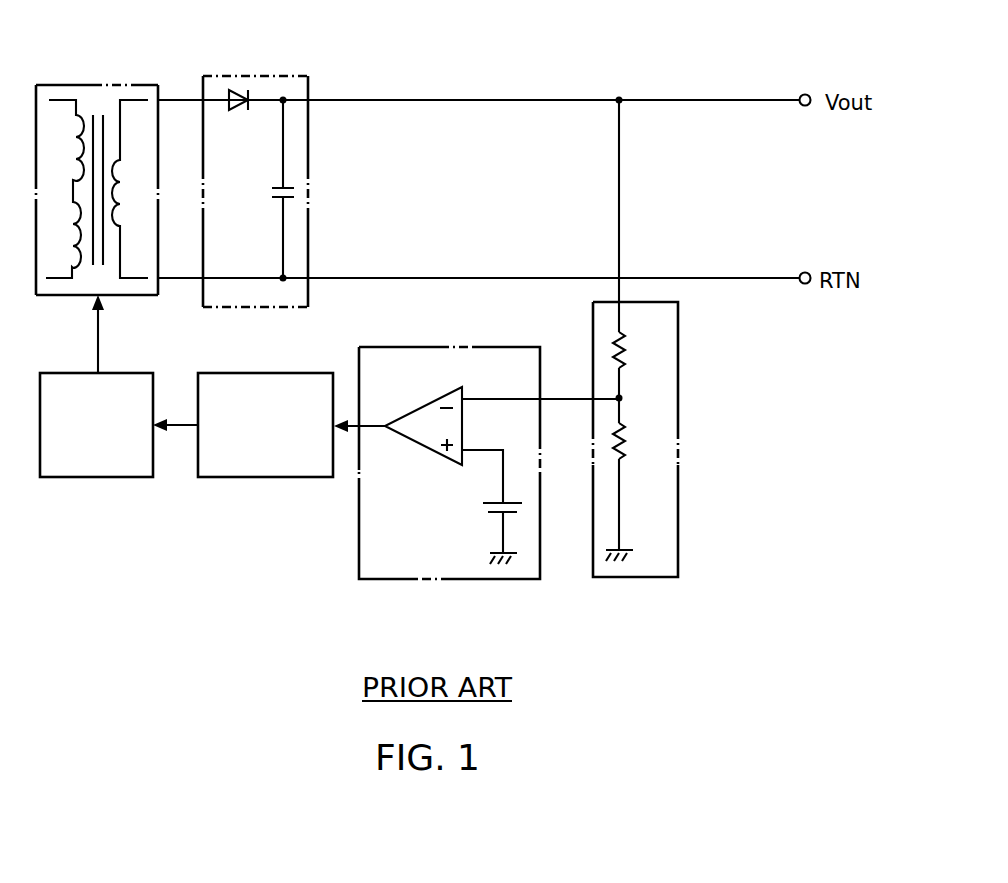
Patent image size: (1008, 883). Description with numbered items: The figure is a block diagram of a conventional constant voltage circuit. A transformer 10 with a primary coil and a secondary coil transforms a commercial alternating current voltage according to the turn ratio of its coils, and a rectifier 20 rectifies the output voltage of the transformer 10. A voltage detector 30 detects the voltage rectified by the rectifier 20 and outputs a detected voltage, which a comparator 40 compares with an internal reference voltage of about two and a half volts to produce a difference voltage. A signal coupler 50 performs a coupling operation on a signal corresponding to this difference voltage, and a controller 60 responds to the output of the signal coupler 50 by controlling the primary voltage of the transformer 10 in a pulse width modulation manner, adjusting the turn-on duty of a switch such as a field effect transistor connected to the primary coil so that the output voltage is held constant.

The transformer 10 is at (133, 85).
The rectifier 20 is at (293, 76).
The voltage detector 30 is at (678, 367).
The comparator 40 is at (357, 556).
The signal coupler 50 is at (257, 477).
The controller 60 is at (89, 477).